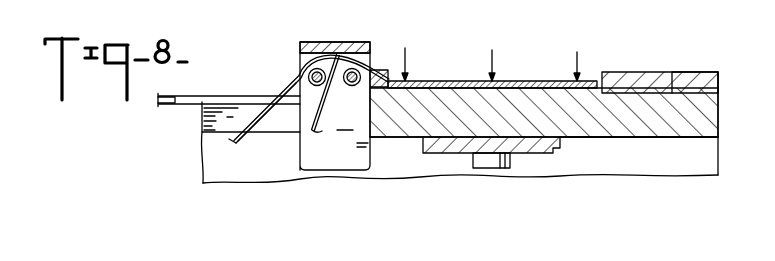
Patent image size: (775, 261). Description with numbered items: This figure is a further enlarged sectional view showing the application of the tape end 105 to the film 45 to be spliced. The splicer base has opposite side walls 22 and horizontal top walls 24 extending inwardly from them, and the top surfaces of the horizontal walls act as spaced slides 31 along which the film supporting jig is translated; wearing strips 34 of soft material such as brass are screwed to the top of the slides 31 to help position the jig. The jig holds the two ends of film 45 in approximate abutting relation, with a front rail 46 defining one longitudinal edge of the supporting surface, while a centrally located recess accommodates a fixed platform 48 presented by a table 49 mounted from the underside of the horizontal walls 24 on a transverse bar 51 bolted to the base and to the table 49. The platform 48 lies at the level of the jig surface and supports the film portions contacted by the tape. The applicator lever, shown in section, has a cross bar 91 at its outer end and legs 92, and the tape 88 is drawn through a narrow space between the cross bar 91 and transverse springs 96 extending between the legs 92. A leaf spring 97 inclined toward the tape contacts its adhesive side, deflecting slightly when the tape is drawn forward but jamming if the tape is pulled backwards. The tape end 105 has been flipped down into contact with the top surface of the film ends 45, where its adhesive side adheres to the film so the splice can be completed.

The side walls 22 is at (209, 167).
The horizontal top walls 24 is at (202, 127).
The slides 31 is at (225, 96).
The wearing strips 34 is at (173, 105).
The film 45 is at (440, 87).
The front rail 46 is at (640, 73).
The platform 48 is at (684, 73).
The table 49 is at (688, 134).
The transverse bar 51 is at (561, 147).
The tape 88 is at (258, 122).
The cross bar 91 is at (320, 42).
The legs 92 is at (358, 118).
The transverse springs 96 is at (303, 82).
The leaf spring 97 is at (316, 127).
The tape end 105 is at (513, 82).